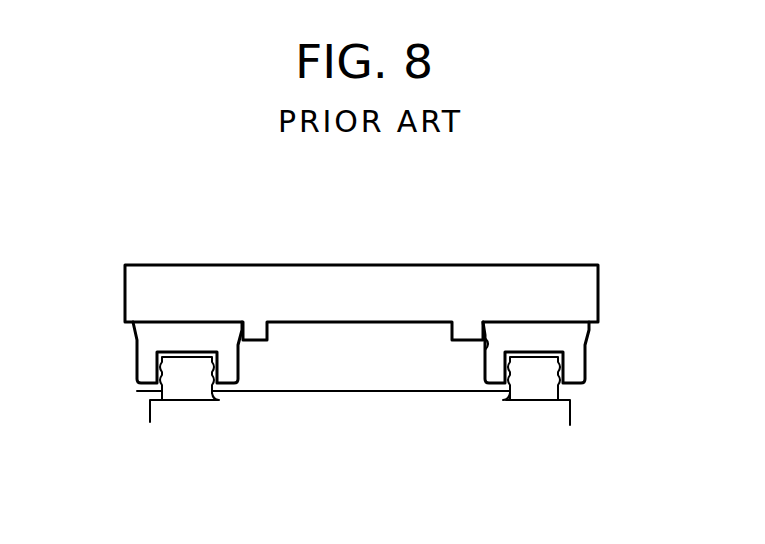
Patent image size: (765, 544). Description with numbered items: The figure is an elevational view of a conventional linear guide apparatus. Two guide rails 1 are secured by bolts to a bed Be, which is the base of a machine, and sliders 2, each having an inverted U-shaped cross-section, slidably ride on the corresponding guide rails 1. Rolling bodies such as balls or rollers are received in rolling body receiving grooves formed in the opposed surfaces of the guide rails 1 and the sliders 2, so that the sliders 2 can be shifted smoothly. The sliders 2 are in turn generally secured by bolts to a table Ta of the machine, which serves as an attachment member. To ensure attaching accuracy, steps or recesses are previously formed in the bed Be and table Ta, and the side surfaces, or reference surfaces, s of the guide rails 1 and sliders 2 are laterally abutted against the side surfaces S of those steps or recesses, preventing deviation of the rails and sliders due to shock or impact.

The guide rail 1 is at (170, 391).
The slider 2 is at (135, 342).
The side surface of step or recess S is at (485, 347).
The side surface (reference surface) s is at (476, 331).
The table Ta is at (269, 280).
The bed Be is at (343, 412).